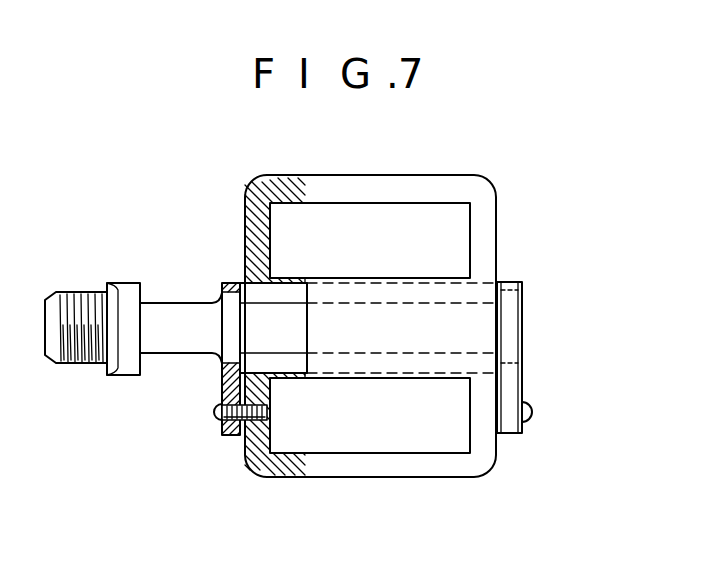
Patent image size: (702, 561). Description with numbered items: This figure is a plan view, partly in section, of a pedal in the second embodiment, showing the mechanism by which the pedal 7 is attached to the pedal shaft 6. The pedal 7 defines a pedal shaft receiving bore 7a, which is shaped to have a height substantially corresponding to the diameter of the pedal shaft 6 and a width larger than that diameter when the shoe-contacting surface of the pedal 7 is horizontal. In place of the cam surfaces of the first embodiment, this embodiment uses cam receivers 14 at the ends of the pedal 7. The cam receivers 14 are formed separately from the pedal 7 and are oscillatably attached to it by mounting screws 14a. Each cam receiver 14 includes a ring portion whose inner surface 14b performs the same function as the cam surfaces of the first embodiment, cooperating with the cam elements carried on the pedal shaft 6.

The pedal shaft 6 is at (182, 303).
The pedal 7 is at (483, 213).
The pedal shaft receiving bore 7a is at (293, 373).
The cam receiver 14 is at (220, 380).
The mounting screw 14a is at (210, 421).
The inner surface 14b is at (230, 367).